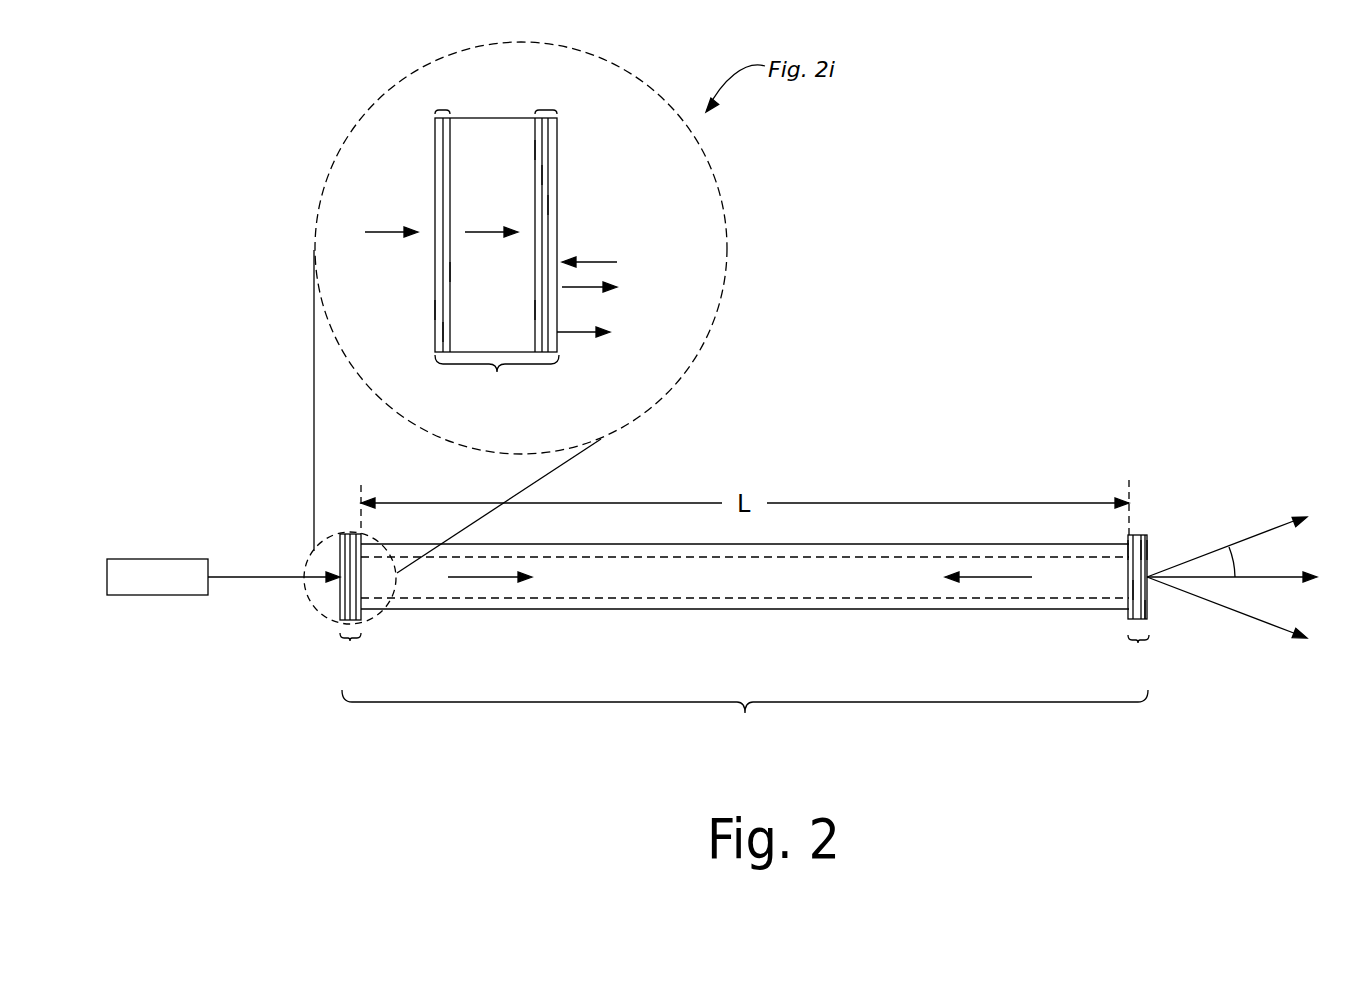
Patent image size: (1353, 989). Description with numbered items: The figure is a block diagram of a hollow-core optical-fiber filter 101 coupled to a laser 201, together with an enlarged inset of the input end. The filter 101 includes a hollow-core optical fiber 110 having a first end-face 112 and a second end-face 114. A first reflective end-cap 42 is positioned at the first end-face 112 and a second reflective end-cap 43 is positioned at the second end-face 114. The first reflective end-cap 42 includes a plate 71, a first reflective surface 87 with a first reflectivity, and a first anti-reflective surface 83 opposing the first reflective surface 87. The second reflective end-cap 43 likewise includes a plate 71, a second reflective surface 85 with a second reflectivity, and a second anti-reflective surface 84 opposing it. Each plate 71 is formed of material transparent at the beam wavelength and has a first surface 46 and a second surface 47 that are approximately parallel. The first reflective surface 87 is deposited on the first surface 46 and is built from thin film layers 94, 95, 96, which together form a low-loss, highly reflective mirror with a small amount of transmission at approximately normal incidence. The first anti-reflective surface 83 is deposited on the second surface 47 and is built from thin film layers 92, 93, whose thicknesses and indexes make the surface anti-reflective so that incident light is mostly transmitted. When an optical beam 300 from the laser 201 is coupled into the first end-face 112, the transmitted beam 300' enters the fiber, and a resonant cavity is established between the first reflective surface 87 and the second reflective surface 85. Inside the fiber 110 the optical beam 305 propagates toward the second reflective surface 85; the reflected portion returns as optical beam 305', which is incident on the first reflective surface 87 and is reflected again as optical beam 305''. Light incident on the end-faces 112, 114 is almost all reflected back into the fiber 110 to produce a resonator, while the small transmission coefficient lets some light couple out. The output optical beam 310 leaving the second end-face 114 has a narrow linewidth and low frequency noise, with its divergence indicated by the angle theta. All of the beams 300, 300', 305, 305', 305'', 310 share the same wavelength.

In FIG. 2i, the plate 71 is at (497, 118).
In FIG. 2, the plate 71 is at (1144, 535).
In FIG. 2i, the first anti-reflective surface 83 is at (447, 110).
In FIG. 2i, the first reflective surface 87 is at (548, 110).
In FIG. 2i, the thin film layer 96 is at (538, 150).
In FIG. 2i, the thin film layer 95 is at (545, 177).
In FIG. 2i, the thin film layer 94 is at (551, 204).
In FIG. 2i, the thin film layer 93 is at (438, 310).
In FIG. 2i, the thin film layer 92 is at (445, 332).
In FIG. 2i, the second surface 47 is at (452, 272).
In FIG. 2, the second surface 47 is at (1143, 590).
In FIG. 2i, the first surface 46 is at (535, 310).
In FIG. 2, the first surface 46 is at (1143, 612).
In FIG. 2i, the first reflective end-cap 42 is at (497, 372).
In FIG. 2, the first reflective end-cap 42 is at (352, 641).
In FIG. 2, the second reflective end-cap 43 is at (1140, 641).
In FIG. 2i, the optical beam 300 is at (395, 206).
In FIG. 2, the optical beam 300 is at (274, 551).
In FIG. 2i, the optical beam 300' is at (496, 206).
In FIG. 2i, the optical beam 305 is at (588, 356).
In FIG. 2, the optical beam 305 is at (490, 610).
In FIG. 2i, the optical beam 305' is at (618, 241).
In FIG. 2, the optical beam 305' is at (988, 609).
In FIG. 2i, the optical beam 305'' is at (620, 312).
In FIG. 2, the laser 201 is at (142, 572).
In FIG. 2, the first end-face 112 is at (362, 549).
In FIG. 2, the second end-face 114 is at (1129, 548).
In FIG. 2, the hollow-core optical fiber 110 is at (745, 576).
In FIG. 2, the hollow-core optical-fiber filter 101 is at (745, 725).
In FIG. 2, the second reflective surface 85 is at (1133, 535).
In FIG. 2, the second anti-reflective surface 84 is at (1148, 530).
In FIG. 2, the optical beam 310 is at (1237, 634).